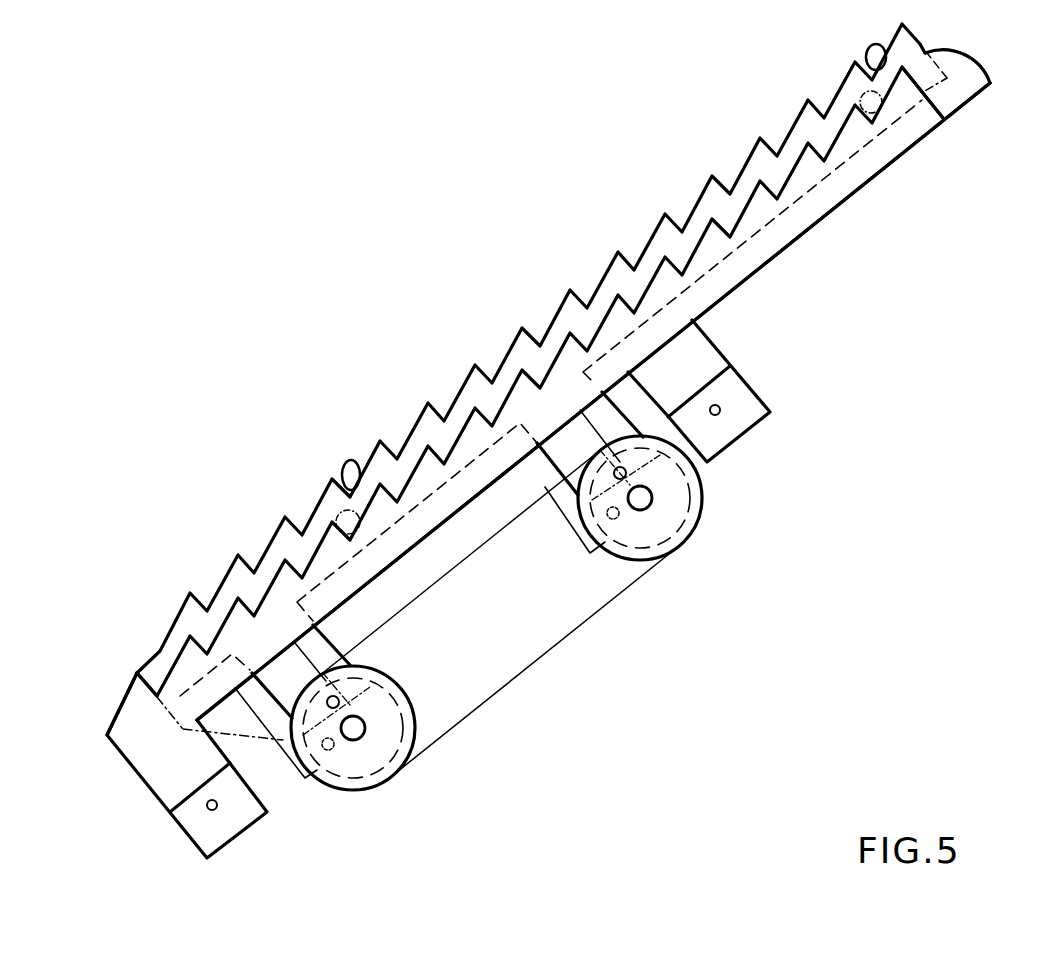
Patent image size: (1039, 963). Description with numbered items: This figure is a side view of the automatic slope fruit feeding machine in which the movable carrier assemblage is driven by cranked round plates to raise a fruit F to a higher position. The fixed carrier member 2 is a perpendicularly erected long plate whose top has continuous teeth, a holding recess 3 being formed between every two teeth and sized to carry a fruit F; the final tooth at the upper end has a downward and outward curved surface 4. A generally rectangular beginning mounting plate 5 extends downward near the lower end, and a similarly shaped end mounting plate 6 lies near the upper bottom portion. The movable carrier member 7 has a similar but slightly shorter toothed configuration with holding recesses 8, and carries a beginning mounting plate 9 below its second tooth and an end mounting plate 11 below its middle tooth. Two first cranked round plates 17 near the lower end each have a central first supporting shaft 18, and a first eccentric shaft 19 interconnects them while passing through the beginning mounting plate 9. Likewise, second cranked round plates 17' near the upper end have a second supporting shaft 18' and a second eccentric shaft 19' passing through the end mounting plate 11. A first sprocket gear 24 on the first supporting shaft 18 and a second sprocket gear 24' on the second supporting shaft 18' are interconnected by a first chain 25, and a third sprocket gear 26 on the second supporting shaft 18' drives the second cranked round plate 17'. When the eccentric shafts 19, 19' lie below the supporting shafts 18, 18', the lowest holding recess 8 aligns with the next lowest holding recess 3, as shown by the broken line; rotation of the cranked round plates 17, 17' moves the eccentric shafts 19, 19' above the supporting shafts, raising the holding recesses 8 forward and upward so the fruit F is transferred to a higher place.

The fixed carrier member 2 is at (106, 694).
The holding recess 3 is at (210, 633).
The downward and outward curved surface 4 is at (972, 82).
The beginning mounting plate 5 is at (200, 763).
The end mounting plate 6 is at (772, 411).
The movable carrier member 7 is at (217, 557).
The holding recess 8 is at (303, 517).
The beginning mounting plate 9 is at (318, 648).
The end mounting plate 11 is at (533, 478).
The first cranked round plate 17 is at (366, 762).
The second cranked round plate 17' is at (719, 503).
The first supporting shaft 18 is at (408, 707).
The second supporting shaft 18' is at (728, 492).
The first eccentric shaft 19 is at (398, 753).
The second eccentric shaft 19' is at (572, 546).
The first sprocket gear 24 is at (381, 740).
The second sprocket gear 24' is at (647, 560).
The first chain 25 is at (547, 650).
The third sprocket gear 26 is at (640, 498).
The fruit F is at (349, 460).